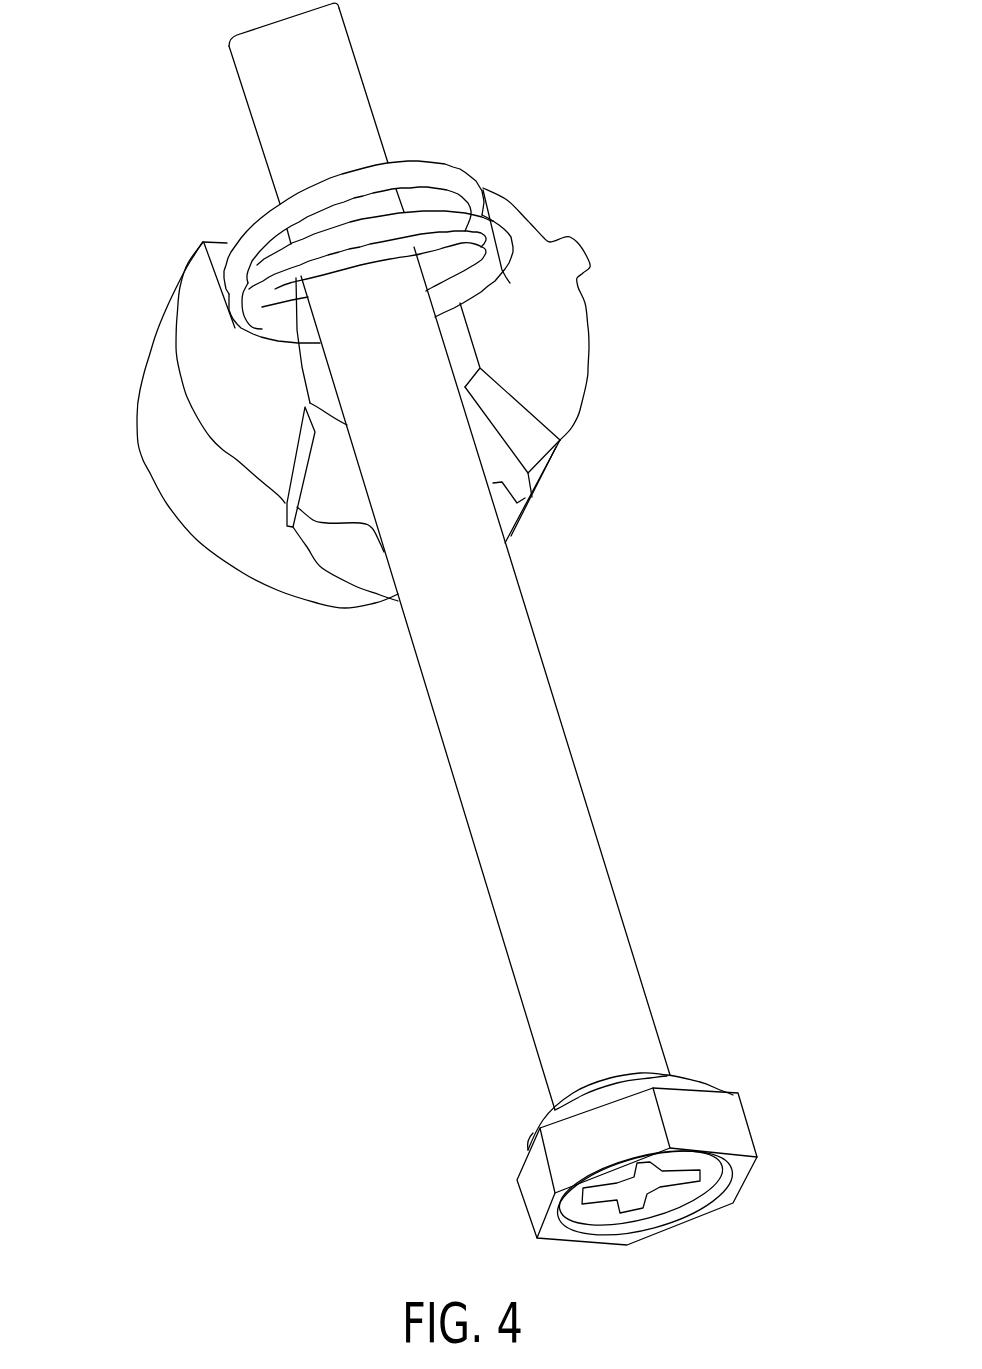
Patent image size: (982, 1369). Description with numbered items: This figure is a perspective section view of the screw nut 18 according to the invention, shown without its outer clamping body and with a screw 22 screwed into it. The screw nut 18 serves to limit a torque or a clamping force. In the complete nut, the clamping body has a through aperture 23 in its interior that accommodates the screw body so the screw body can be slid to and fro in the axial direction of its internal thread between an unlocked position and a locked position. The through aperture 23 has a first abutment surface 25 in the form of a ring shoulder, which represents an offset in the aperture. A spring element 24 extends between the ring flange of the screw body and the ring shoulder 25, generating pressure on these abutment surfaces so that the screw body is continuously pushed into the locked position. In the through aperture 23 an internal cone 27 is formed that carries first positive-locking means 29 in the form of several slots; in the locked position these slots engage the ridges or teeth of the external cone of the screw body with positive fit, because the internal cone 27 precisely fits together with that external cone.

The screw nut 18 is at (725, 322).
The screw 22 is at (543, 755).
The through aperture 23 is at (317, 367).
The spring element 24 is at (465, 180).
The first abutment surface 25 is at (447, 302).
The internal cone 27 is at (525, 420).
The first positive-locking means 29 is at (515, 483).